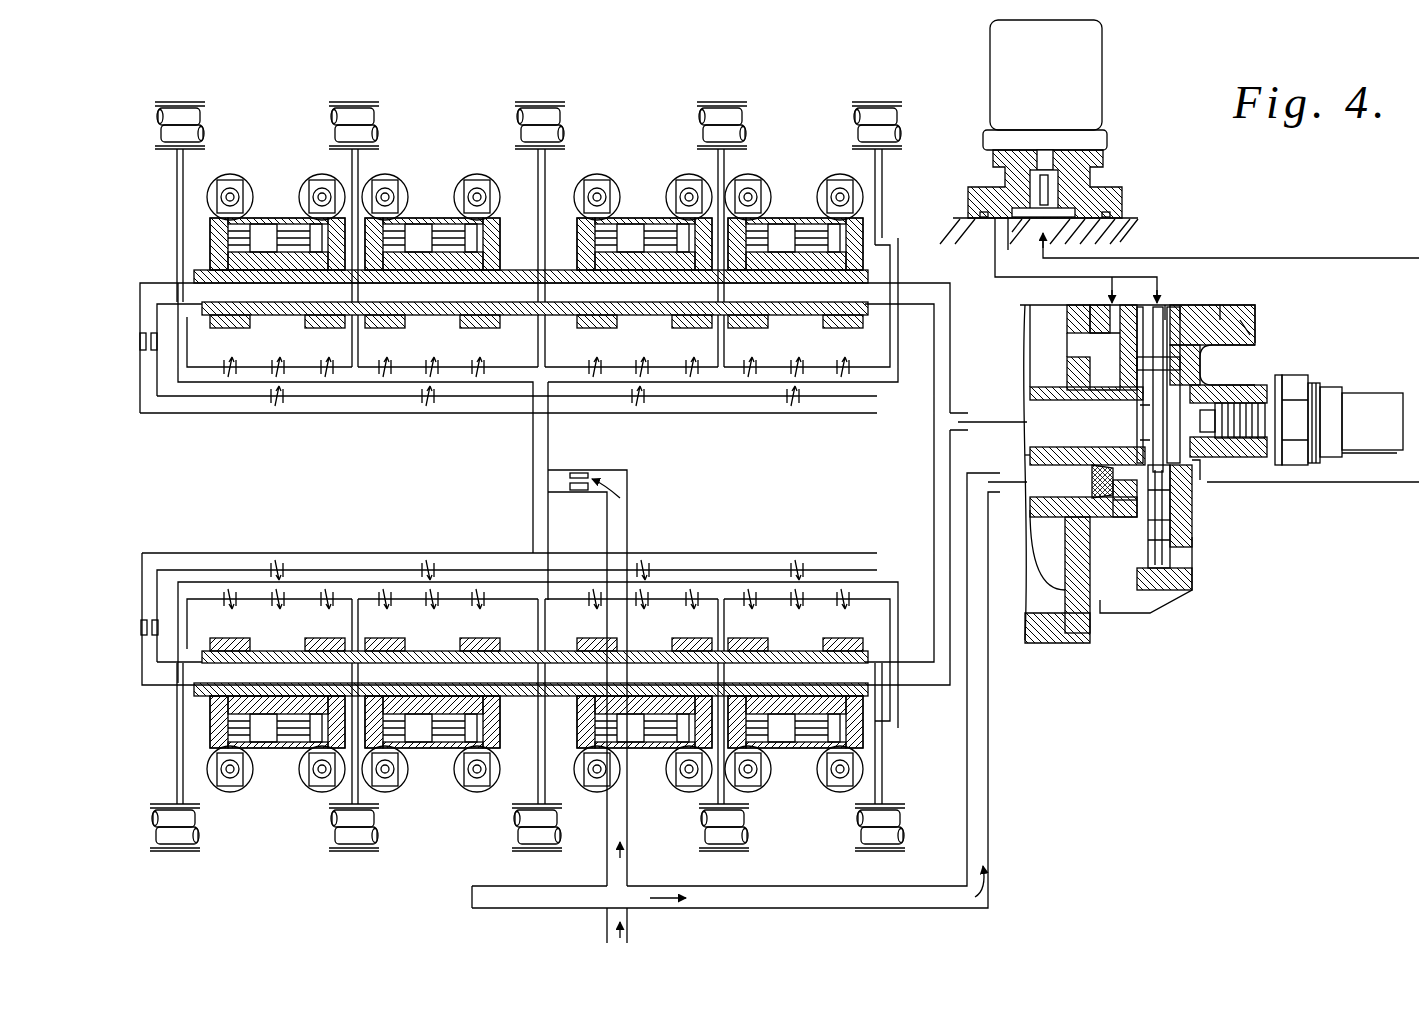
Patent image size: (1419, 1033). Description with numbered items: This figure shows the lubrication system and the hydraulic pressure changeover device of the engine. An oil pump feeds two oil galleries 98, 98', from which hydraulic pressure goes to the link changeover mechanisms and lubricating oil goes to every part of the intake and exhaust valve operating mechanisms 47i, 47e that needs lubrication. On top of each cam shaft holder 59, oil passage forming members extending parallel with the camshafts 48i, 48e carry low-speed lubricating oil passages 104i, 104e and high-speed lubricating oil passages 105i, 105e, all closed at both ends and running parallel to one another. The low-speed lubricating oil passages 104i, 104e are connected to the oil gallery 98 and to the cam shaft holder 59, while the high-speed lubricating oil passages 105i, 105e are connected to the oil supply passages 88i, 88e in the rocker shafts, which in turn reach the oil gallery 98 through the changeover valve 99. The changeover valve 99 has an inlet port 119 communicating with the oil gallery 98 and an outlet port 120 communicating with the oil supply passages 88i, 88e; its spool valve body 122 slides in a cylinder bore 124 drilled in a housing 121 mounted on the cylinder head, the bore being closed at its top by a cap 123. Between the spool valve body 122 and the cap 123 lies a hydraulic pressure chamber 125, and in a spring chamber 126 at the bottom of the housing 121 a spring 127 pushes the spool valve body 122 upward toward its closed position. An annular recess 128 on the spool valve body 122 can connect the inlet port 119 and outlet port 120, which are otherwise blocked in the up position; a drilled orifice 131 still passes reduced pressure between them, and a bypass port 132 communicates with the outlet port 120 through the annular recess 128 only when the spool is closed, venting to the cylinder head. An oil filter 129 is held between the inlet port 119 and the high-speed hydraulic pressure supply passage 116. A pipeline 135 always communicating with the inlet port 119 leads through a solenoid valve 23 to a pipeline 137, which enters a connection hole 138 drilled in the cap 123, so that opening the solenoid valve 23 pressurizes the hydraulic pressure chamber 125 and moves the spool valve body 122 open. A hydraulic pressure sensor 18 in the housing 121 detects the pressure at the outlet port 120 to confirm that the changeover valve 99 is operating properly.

The valve operating mechanism 47i is at (272, 212).
The valve operating mechanism 47e is at (278, 756).
The camshaft 48i is at (893, 108).
The camshaft 48e is at (895, 812).
The cam shaft holder 59 is at (883, 100).
The oil supply passage 88i is at (631, 318).
The oil supply passage 88e is at (664, 651).
The high-speed lubricating oil passage 105i is at (492, 414).
The high-speed lubricating oil passage 105e is at (477, 552).
The low-speed lubricating oil passage 104i is at (713, 370).
The low-speed lubricating oil passage 104e is at (717, 587).
The oil gallery 98' is at (617, 706).
The oil gallery 98 is at (760, 675).
The solenoid valve 23 is at (1112, 106).
The pipeline 137 is at (1012, 279).
The connection hole 138 is at (1173, 306).
The cap 123 is at (1185, 303).
The hydraulic pressure chamber 125 is at (1225, 303).
The cylinder bore 124 is at (1248, 333).
The spool valve body 122 is at (1205, 370).
The housing 121 is at (1265, 385).
The hydraulic pressure sensor 18 is at (1372, 400).
The pipeline 135 is at (1390, 483).
The bypass port 132 is at (1112, 382).
The outlet port 120 is at (1112, 421).
The orifice 131 is at (1120, 447).
The high-speed hydraulic pressure supply passage 116 is at (1022, 456).
The oil filter 129 is at (1090, 480).
The inlet port 119 is at (1092, 556).
The annular recess 128 is at (1205, 462).
The spring chamber 126 is at (1160, 519).
The changeover valve 99 is at (1200, 550).
The spring 127 is at (1170, 566).